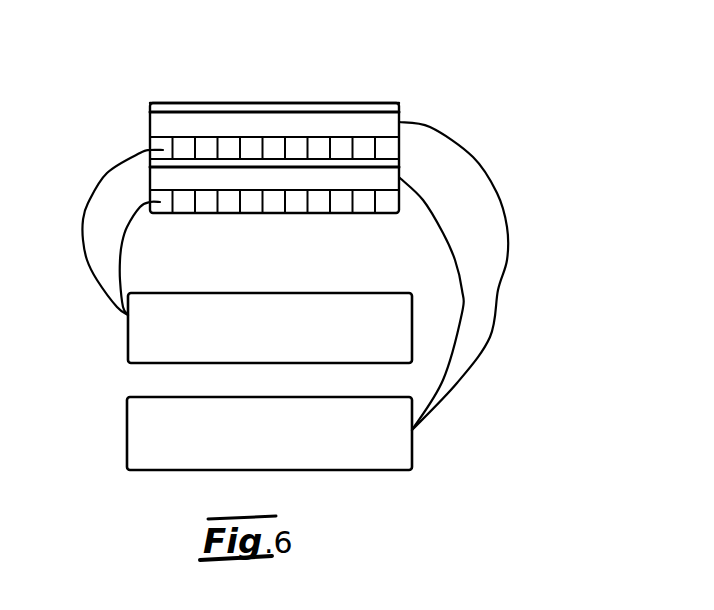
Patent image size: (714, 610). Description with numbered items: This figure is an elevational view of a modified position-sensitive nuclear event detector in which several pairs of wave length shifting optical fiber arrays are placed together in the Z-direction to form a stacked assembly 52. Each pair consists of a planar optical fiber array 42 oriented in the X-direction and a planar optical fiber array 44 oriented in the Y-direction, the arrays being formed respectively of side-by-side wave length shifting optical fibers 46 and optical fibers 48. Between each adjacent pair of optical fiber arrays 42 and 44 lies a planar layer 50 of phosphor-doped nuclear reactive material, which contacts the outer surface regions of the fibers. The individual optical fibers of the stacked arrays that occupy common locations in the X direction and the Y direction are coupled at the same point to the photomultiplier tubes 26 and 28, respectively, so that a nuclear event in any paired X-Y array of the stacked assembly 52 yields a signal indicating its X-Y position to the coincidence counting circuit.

The photomultiplier tube 26 is at (127, 328).
The photomultiplier tube 28 is at (127, 428).
The planar array of wave length shifting optical fibers 42 is at (353, 219).
The planar array of wave length shifting optical fibers 44 is at (83, 221).
The wave length shifting optical fibers 46 is at (298, 143).
The wave length shifting optical fibers 48 is at (178, 178).
The planar layer of phosphor-doped nuclear reactive material 50 is at (362, 106).
The stacked assembly 52 is at (287, 97).